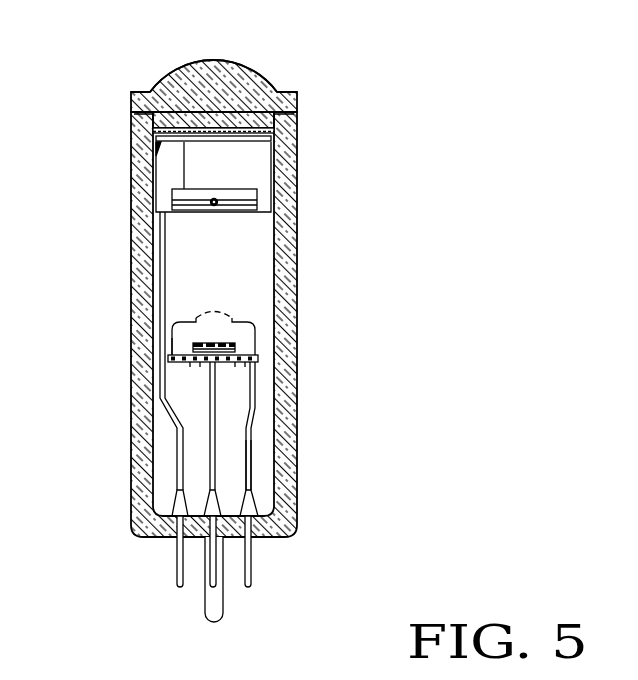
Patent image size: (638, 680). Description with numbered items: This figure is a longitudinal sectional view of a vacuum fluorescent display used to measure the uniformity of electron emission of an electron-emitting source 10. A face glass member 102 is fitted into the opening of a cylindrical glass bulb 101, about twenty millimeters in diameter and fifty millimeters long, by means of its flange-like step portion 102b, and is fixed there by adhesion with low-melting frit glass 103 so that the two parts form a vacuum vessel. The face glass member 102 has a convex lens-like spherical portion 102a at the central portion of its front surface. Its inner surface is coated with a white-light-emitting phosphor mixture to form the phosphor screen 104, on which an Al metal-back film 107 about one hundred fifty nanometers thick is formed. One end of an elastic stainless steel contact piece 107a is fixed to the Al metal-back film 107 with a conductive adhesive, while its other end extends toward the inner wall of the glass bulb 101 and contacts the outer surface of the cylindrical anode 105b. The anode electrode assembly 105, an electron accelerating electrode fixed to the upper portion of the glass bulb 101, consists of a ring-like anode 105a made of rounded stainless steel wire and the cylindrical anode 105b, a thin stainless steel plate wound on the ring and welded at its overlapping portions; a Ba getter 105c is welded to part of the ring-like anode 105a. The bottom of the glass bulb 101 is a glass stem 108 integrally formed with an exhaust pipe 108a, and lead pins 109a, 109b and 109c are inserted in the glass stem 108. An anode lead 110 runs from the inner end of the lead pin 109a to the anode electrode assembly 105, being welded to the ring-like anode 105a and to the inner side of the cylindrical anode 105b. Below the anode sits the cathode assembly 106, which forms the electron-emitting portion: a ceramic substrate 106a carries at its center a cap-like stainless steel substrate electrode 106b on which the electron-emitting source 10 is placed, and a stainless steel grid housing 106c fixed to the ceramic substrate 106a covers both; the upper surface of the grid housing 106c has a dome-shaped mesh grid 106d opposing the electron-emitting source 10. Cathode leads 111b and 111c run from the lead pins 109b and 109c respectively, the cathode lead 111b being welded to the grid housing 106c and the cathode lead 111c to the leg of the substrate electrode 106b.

The electron-emitting source 10 is at (237, 347).
The glass bulb 101 is at (140, 236).
The face glass member 102 is at (283, 70).
The spherical portion 102a is at (181, 66).
The flange-like step portion 102b is at (131, 92).
The low-melting frit glass 103 is at (131, 110).
The phosphor screen 104 is at (276, 130).
The anode electrode assembly 105 is at (264, 168).
The ring-like anode 105a is at (240, 212).
The cylindrical anode 105b is at (156, 186).
The Ba getter 105c is at (219, 203).
The cathode assembly 106 is at (264, 315).
The ceramic substrate 106a is at (254, 366).
The substrate electrode 106b is at (260, 358).
The grid housing 106c is at (172, 338).
The mesh grid 106d is at (232, 316).
The Al metal-back film 107 is at (272, 140).
The contact piece 107a is at (156, 144).
The glass stem 108 is at (160, 537).
The exhaust pipe 108a is at (224, 607).
The lead pin 109a is at (177, 580).
The lead pin 109b is at (252, 565).
The lead pin 109c is at (208, 588).
The anode lead 110 is at (160, 278).
The cathode lead 111b is at (252, 463).
The cathode lead 111c is at (216, 432).